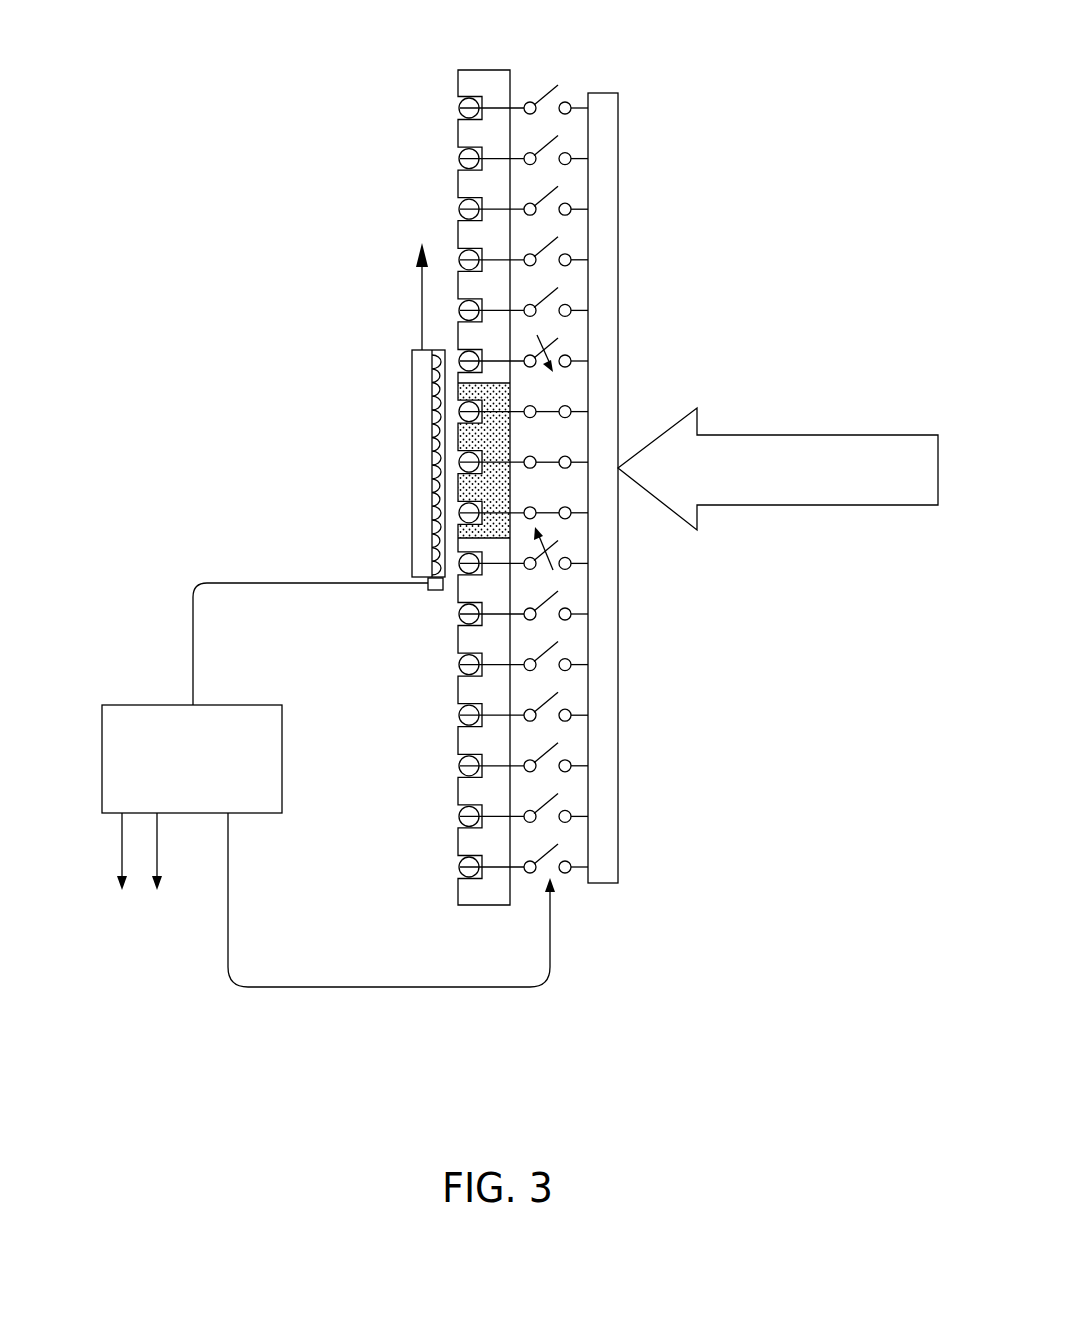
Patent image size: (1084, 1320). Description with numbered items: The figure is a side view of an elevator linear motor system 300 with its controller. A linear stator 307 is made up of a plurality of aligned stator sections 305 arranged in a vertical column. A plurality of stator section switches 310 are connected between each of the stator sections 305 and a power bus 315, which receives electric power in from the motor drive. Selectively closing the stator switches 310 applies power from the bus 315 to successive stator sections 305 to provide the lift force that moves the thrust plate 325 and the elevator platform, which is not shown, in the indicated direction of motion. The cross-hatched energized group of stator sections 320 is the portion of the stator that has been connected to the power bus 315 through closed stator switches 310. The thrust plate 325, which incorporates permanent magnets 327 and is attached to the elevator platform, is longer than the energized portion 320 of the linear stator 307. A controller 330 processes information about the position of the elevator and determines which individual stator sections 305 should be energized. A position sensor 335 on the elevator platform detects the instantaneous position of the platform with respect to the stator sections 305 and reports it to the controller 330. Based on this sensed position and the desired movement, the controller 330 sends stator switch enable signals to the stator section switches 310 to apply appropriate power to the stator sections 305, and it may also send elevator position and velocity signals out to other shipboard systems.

The linear motor system 300 is at (240, 157).
The stator sections 305 is at (457, 792).
The linear stator 307 is at (510, 78).
The stator section switches 310 is at (565, 92).
The power bus 315 is at (618, 705).
The energized group of stator sections 320 is at (510, 398).
The thrust plate 325 is at (410, 383).
The permanent magnets 327 is at (433, 532).
The controller 330 is at (275, 758).
The position sensor 335 is at (438, 591).